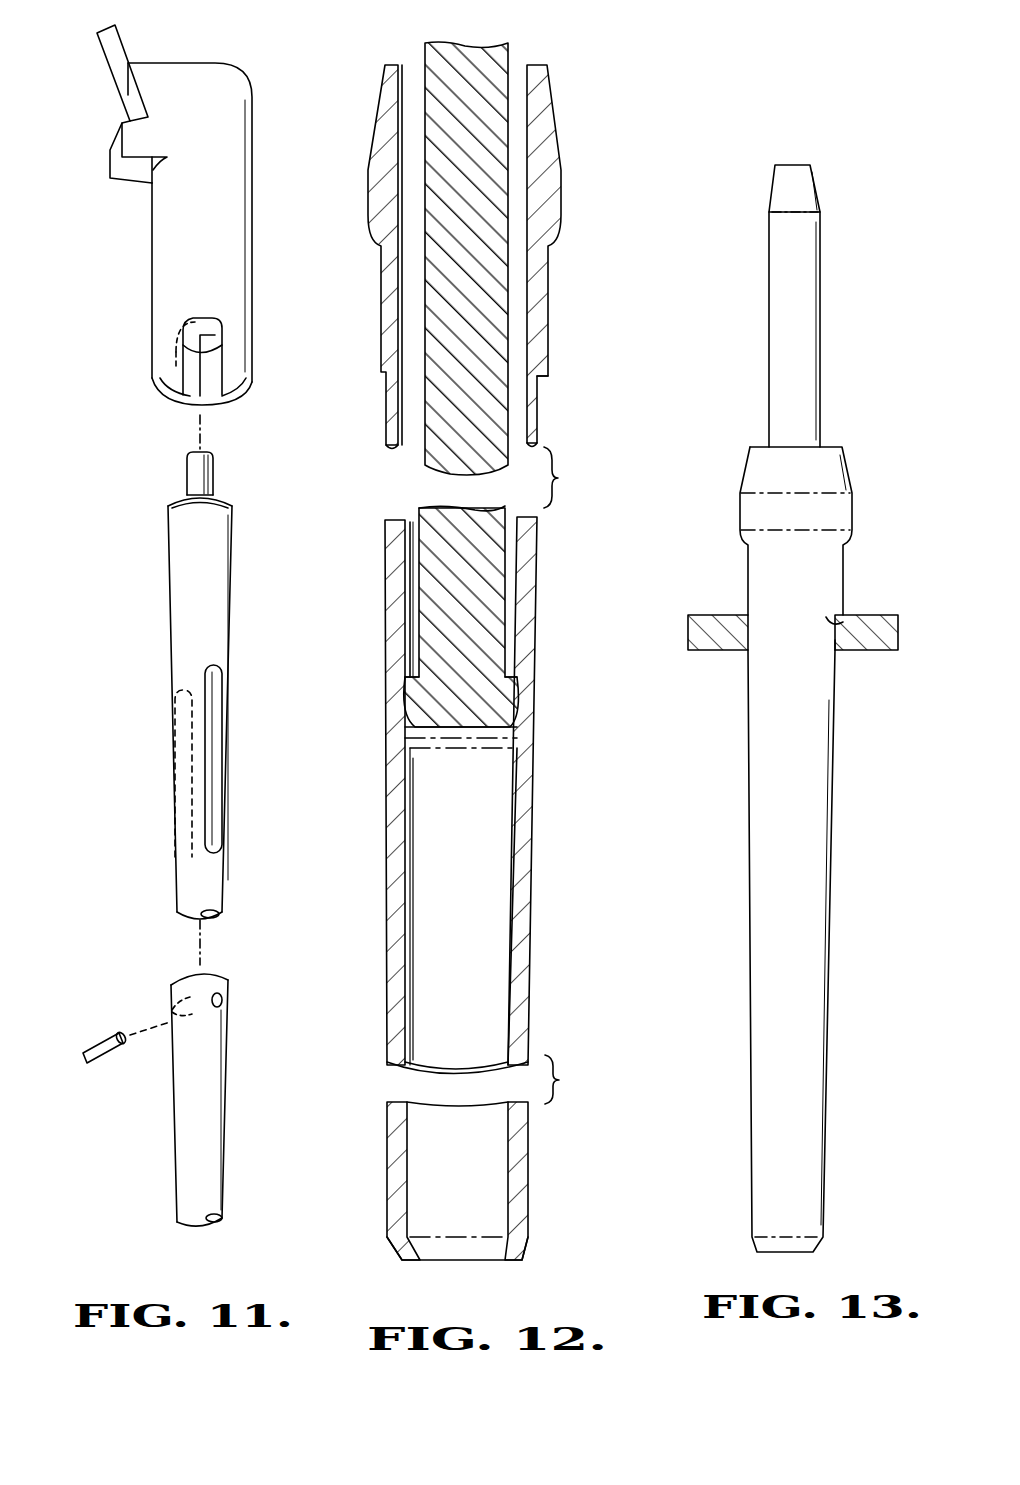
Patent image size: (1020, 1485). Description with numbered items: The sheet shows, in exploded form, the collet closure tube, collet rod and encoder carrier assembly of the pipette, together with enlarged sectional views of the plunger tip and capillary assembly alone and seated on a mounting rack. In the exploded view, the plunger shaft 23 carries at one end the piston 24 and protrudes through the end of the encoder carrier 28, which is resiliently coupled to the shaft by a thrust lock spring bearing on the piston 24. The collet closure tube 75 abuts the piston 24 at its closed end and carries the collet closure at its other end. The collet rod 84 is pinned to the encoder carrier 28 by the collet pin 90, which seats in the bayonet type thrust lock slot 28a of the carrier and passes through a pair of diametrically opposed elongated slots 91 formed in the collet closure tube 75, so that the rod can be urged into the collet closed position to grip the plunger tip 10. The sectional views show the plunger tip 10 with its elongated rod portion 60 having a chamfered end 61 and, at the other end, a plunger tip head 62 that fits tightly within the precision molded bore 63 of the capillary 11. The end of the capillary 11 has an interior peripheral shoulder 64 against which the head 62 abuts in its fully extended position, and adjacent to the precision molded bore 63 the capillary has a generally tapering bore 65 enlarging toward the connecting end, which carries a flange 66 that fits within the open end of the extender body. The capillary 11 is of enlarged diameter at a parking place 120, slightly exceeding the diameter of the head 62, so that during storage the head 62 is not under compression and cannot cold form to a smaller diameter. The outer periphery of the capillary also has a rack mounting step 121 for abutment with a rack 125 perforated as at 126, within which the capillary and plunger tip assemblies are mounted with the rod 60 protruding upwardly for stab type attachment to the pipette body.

In FIG. 12, the plunger tip 10 is at (410, 572).
In FIG. 13, the plunger tip 10 is at (777, 328).
In FIG. 12, the capillary 11 is at (387, 943).
In FIG. 13, the capillary 11 is at (752, 925).
In FIG. 11, the plunger shaft 23 is at (186, 472).
In FIG. 11, the piston 24 is at (233, 498).
In FIG. 11, the encoder carrier 28 is at (243, 238).
In FIG. 11, the bayonet type thrust lock slot 28a is at (218, 324).
In FIG. 12, the elongated rod portion 60 is at (508, 295).
In FIG. 13, the elongated rod portion 60 is at (821, 372).
In FIG. 13, the chamfered end 61 is at (780, 186).
In FIG. 12, the plunger tip head 62 is at (512, 700).
In FIG. 12, the precision molded bore 63 is at (415, 862).
In FIG. 12, the interior peripheral shoulder 64 is at (417, 1243).
In FIG. 12, the tapering bore 65 is at (400, 284).
In FIG. 12, the flange 66 is at (557, 158).
In FIG. 13, the flange 66 is at (848, 508).
In FIG. 11, the collet closure tube 75 is at (168, 632).
In FIG. 11, the collet rod 84 is at (224, 1135).
In FIG. 11, the collet pin 90 is at (108, 1038).
In FIG. 11, the elongated slots 91 is at (213, 736).
In FIG. 12, the parking place 120 is at (525, 740).
In FIG. 12, the rack mounting step 121 is at (540, 378).
In FIG. 13, the rack mounting step 121 is at (843, 614).
In FIG. 13, the rack 125 is at (712, 652).
In FIG. 13, the perforation 126 is at (834, 652).